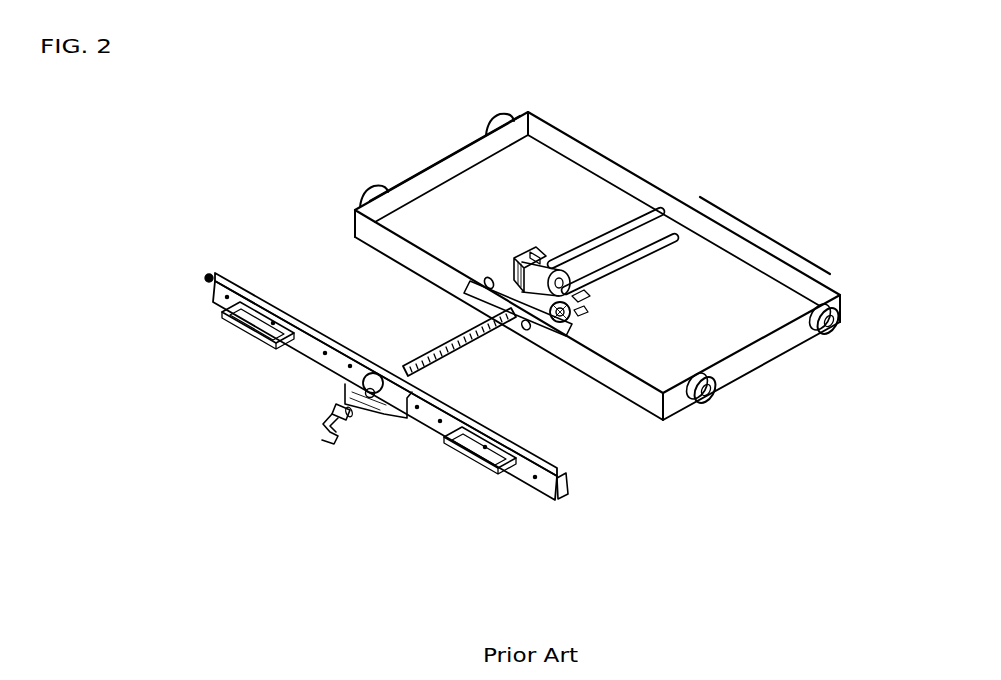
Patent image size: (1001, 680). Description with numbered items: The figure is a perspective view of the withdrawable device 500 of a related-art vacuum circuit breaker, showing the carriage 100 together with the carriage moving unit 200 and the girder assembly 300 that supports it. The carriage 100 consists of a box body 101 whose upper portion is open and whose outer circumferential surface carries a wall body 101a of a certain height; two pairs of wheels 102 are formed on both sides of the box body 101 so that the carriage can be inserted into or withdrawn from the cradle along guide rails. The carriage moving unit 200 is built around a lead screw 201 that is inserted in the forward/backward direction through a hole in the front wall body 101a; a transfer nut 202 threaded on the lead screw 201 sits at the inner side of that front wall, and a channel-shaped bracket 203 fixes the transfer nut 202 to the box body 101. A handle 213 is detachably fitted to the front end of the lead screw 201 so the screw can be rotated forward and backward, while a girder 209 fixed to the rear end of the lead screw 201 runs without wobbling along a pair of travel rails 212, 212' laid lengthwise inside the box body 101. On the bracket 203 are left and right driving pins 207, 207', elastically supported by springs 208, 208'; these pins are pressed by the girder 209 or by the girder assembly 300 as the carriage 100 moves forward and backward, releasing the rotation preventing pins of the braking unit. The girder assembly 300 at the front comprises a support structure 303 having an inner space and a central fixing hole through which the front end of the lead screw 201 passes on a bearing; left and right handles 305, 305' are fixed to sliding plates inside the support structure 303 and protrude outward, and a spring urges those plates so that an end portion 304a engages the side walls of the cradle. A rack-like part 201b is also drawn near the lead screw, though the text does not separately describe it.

The carriage 100 is at (410, 146).
The box body 101 is at (395, 178).
The wall body 101a is at (468, 142).
The wheels 102 is at (496, 117).
The withdrawable device 500 is at (795, 248).
The carriage moving unit 200 is at (500, 328).
The lead screw 201 is at (455, 355).
The rack end 201b is at (531, 330).
The transfer nut 202 is at (553, 264).
The channel-shaped bracket 203 is at (572, 320).
The left driving pin 207 is at (515, 254).
The right driving pin 207' is at (641, 312).
The spring 208 is at (485, 306).
The spring 208' is at (607, 300).
The girder 209 is at (532, 254).
The travel rail 212 is at (613, 201).
The travel rail 212' is at (660, 227).
The handle 213 is at (330, 446).
The girder assembly 300 is at (542, 500).
The support structure 303 is at (522, 485).
The end portion 304a is at (212, 272).
The left handle 305 is at (237, 340).
The right handle 305' is at (472, 468).